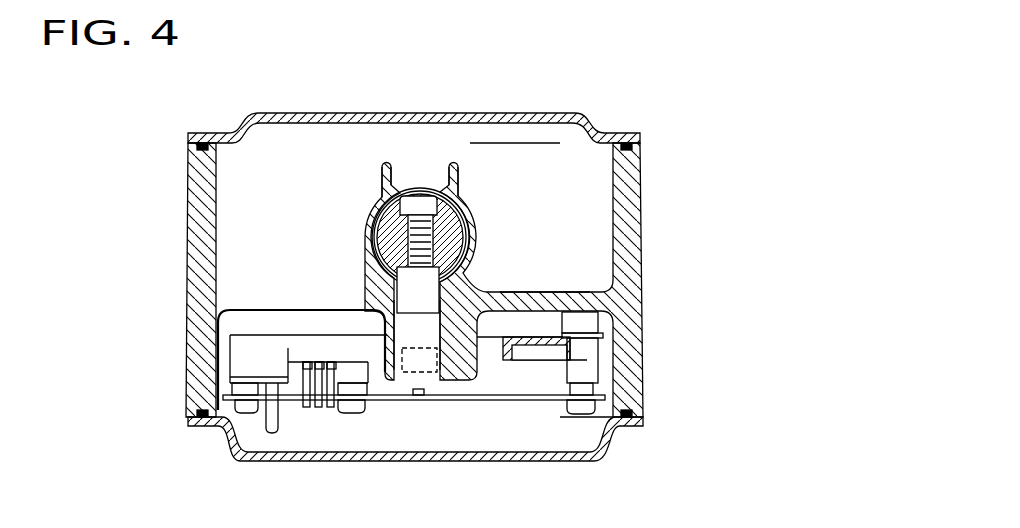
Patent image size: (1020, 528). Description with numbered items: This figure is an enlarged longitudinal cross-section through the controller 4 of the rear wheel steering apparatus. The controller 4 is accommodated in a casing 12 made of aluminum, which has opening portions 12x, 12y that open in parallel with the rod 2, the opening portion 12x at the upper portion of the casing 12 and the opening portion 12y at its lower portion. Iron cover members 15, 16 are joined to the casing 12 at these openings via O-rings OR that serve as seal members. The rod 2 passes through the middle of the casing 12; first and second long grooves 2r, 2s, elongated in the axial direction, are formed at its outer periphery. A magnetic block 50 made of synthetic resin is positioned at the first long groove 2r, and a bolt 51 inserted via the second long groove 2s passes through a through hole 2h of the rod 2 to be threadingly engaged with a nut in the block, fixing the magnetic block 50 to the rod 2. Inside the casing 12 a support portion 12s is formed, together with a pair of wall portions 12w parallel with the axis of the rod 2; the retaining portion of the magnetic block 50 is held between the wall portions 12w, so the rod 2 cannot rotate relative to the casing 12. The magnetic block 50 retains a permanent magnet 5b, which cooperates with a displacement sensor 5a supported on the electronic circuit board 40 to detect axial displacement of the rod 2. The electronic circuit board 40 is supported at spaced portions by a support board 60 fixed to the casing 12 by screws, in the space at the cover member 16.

The O-ring OR is at (199, 141).
The rod 2 is at (371, 215).
The through hole 2h is at (384, 184).
The bolt 51 is at (420, 191).
The second long groove 2s is at (437, 192).
The first long groove 2r is at (456, 204).
The opening portion 12x is at (528, 142).
The cover member 15 is at (575, 112).
The controller 4 is at (574, 171).
The support portion 12s is at (541, 296).
The casing 12 is at (639, 299).
The magnetic block 50 is at (392, 303).
The support board 60 is at (248, 356).
The wall portions 12w is at (390, 343).
The electronic circuit board 40 is at (373, 401).
The displacement sensor 5a is at (418, 402).
The permanent magnet 5b is at (423, 368).
The cover member 16 is at (576, 458).
The opening portion 12y is at (596, 456).